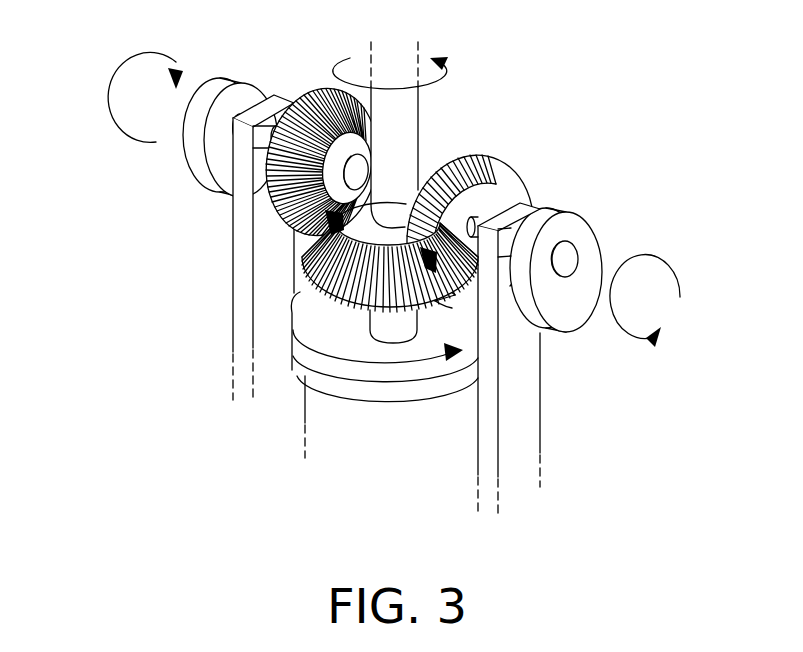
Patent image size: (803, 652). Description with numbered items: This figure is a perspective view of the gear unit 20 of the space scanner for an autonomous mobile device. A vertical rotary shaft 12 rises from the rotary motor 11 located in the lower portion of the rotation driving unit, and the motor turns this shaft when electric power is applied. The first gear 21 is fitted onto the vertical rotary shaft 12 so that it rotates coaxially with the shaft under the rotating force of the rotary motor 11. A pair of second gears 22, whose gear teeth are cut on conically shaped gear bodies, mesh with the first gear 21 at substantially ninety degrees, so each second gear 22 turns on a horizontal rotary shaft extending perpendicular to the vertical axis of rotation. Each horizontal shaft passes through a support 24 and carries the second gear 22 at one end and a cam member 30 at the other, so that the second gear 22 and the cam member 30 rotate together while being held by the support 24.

The rotary motor 11 is at (322, 425).
The vertical rotary shaft 12 is at (413, 116).
The gear unit 20 is at (128, 232).
The first gear 21 is at (312, 286).
The second gear 22 is at (290, 222).
The support 24 is at (262, 325).
The cam member 30 is at (218, 84).